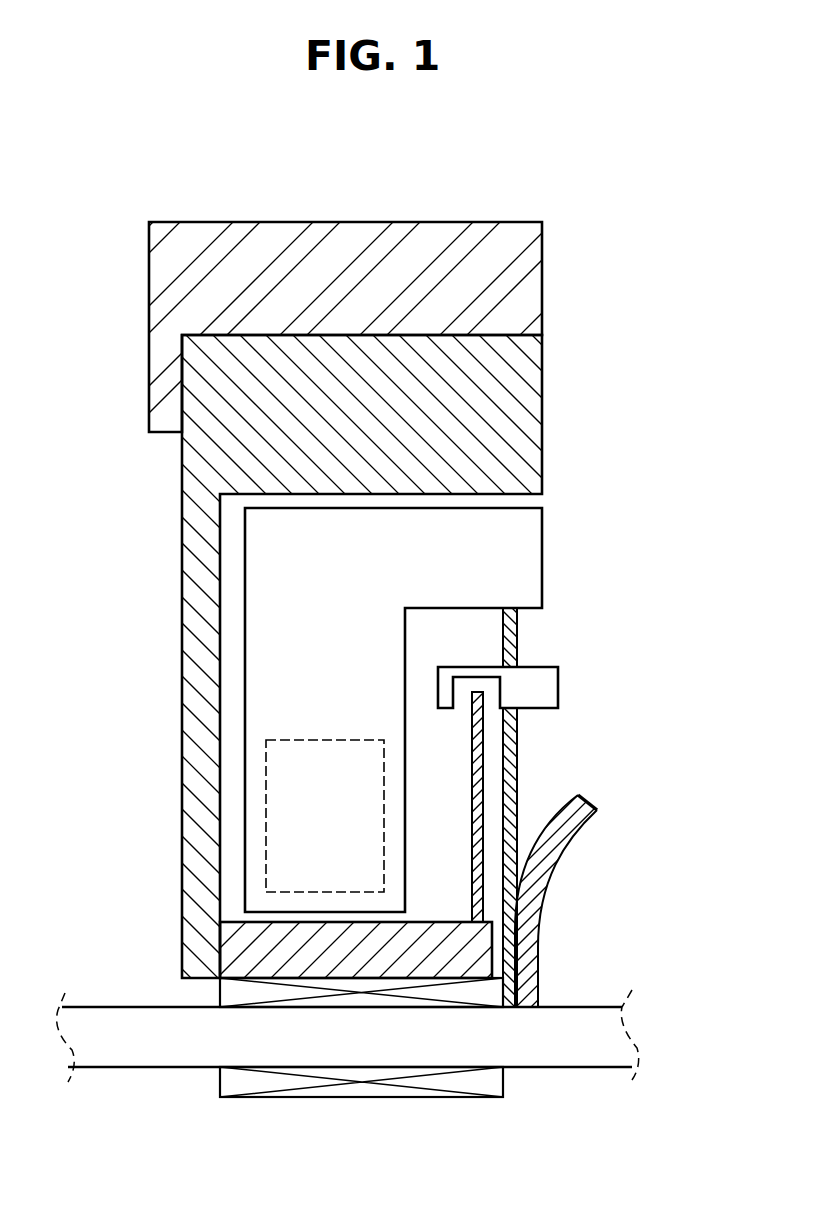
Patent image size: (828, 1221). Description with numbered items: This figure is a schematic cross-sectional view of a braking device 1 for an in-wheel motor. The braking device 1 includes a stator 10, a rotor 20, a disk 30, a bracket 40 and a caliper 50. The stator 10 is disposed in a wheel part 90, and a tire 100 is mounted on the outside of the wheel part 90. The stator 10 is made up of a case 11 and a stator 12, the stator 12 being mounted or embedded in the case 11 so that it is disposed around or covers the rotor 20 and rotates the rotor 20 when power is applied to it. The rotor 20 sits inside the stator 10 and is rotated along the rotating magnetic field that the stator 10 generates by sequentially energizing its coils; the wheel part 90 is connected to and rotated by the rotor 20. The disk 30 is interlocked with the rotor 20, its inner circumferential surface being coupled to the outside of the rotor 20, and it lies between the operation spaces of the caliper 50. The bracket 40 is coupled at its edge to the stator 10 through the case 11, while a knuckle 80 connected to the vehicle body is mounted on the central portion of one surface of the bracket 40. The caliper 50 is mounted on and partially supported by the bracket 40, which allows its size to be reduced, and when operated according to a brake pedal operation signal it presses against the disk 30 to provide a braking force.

The braking device 1 is at (662, 137).
The tire 100 is at (177, 290).
The wheel part 90 is at (203, 394).
The stator 10 is at (469, 710).
The case 11 is at (525, 549).
The stator 12 is at (337, 740).
The caliper 50 is at (555, 685).
The bracket 40 is at (513, 737).
The disk 30 is at (480, 790).
The knuckle 80 is at (538, 895).
The rotor 20 is at (247, 952).